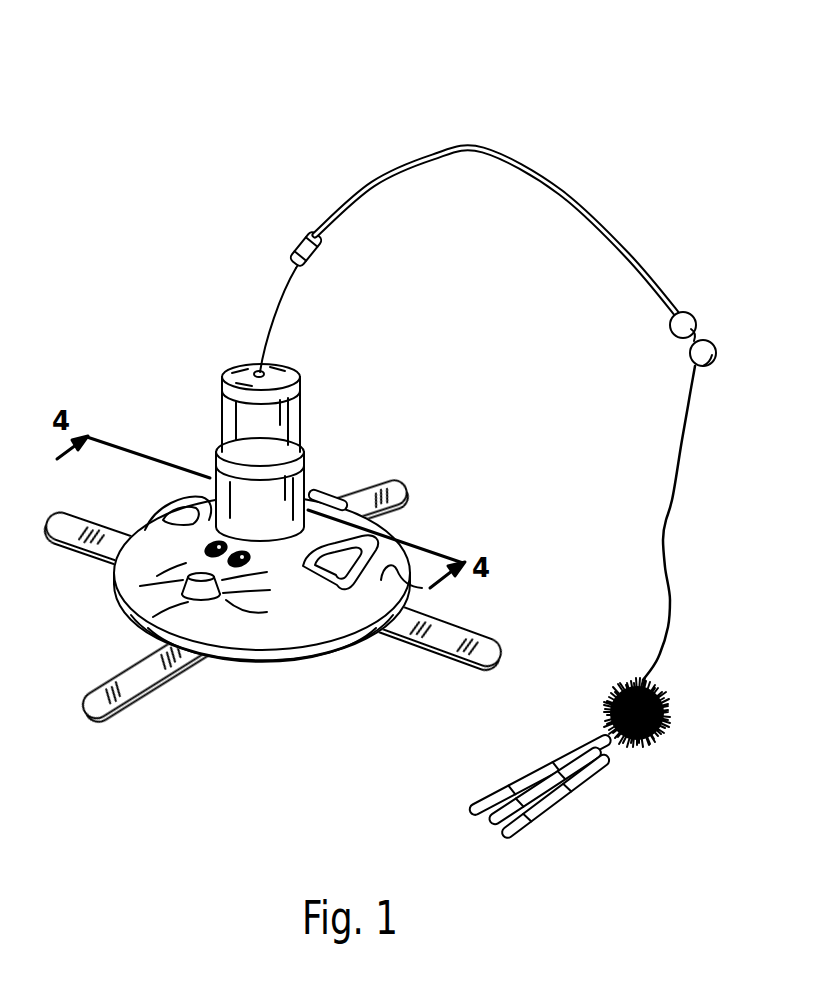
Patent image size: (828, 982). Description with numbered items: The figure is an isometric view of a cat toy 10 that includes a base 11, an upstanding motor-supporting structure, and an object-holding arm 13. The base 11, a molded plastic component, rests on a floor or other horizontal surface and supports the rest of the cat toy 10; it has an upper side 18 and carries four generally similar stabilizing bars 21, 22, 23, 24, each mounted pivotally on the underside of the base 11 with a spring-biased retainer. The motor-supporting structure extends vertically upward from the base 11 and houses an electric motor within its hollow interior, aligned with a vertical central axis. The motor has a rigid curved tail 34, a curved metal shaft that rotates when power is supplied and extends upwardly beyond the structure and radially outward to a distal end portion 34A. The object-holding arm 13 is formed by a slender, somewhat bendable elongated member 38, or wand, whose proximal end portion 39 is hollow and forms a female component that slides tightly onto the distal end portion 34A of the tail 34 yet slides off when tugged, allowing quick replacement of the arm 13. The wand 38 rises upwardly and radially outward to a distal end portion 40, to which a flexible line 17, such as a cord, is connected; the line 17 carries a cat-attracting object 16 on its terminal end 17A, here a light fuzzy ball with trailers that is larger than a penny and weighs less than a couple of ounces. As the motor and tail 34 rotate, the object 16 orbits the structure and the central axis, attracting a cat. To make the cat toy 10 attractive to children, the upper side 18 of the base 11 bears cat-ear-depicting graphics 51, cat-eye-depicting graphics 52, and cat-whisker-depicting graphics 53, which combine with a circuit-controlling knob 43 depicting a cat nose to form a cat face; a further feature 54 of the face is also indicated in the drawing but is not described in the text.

The cat toy 10 is at (136, 108).
The base 11 is at (324, 486).
The object-holding arm 13 is at (431, 176).
The cat-attracting object 16 is at (617, 687).
The flexible line 17 is at (668, 507).
The terminal end 17A is at (643, 680).
The upper side 18 is at (422, 588).
The stabilizing bar 21 is at (57, 540).
The stabilizing bar 22 is at (397, 486).
The stabilizing bar 23 is at (467, 673).
The stabilizing bar 24 is at (125, 721).
The rigid curved tail 34 is at (272, 307).
The distal end portion of the tail 34A is at (299, 274).
The elongated member 38 is at (563, 193).
The proximal end portion 39 is at (320, 257).
The distal end portion 40 is at (693, 357).
The circuit-controlling knob 43 is at (183, 595).
The cat-ear-depicting graphics 51 is at (378, 540).
The cat-eye-depicting graphics 52 is at (176, 511).
The cat-whisker-depicting graphics 53 is at (250, 553).
The mouth 54 is at (270, 607).